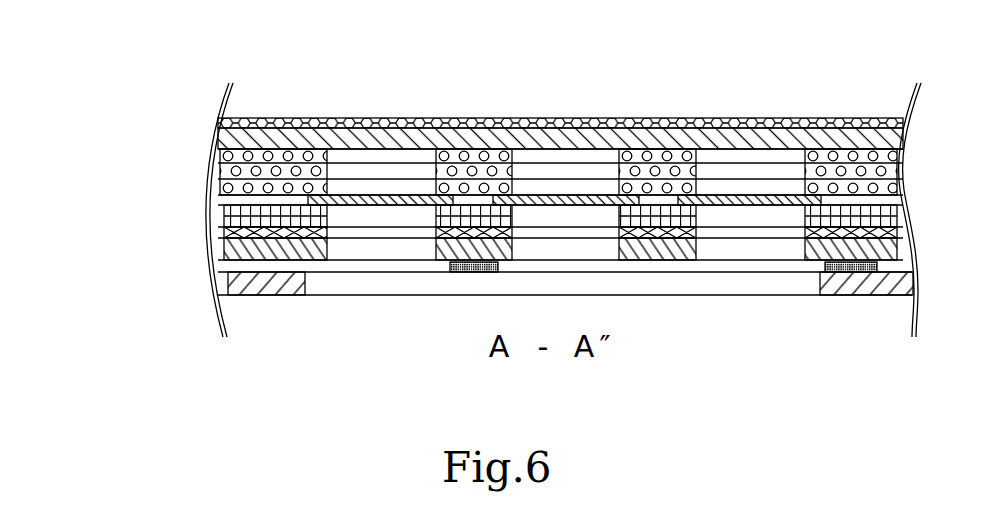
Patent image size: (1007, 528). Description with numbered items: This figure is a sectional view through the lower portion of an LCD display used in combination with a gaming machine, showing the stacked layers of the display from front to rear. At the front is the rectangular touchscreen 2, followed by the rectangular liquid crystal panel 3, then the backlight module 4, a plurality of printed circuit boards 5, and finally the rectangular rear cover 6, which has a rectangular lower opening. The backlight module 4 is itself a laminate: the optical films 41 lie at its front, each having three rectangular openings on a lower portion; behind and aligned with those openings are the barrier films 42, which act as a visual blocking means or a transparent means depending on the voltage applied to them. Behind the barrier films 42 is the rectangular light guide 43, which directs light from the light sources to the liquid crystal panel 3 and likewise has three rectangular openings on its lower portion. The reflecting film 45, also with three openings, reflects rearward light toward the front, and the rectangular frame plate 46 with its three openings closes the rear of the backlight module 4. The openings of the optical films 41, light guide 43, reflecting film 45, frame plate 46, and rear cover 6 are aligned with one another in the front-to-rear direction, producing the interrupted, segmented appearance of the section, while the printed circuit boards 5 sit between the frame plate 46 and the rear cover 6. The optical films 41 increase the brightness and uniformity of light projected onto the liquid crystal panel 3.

The touchscreen 2 is at (753, 121).
The liquid crystal panel 3 is at (828, 135).
The backlight module 4 is at (108, 35).
The optical films 41 is at (215, 185).
The barrier films 42 is at (757, 197).
The light guide 43 is at (223, 208).
The reflecting film 45 is at (230, 233).
The frame plate 46 is at (230, 247).
The printed circuit boards 5 is at (450, 265).
The rear cover 6 is at (235, 285).